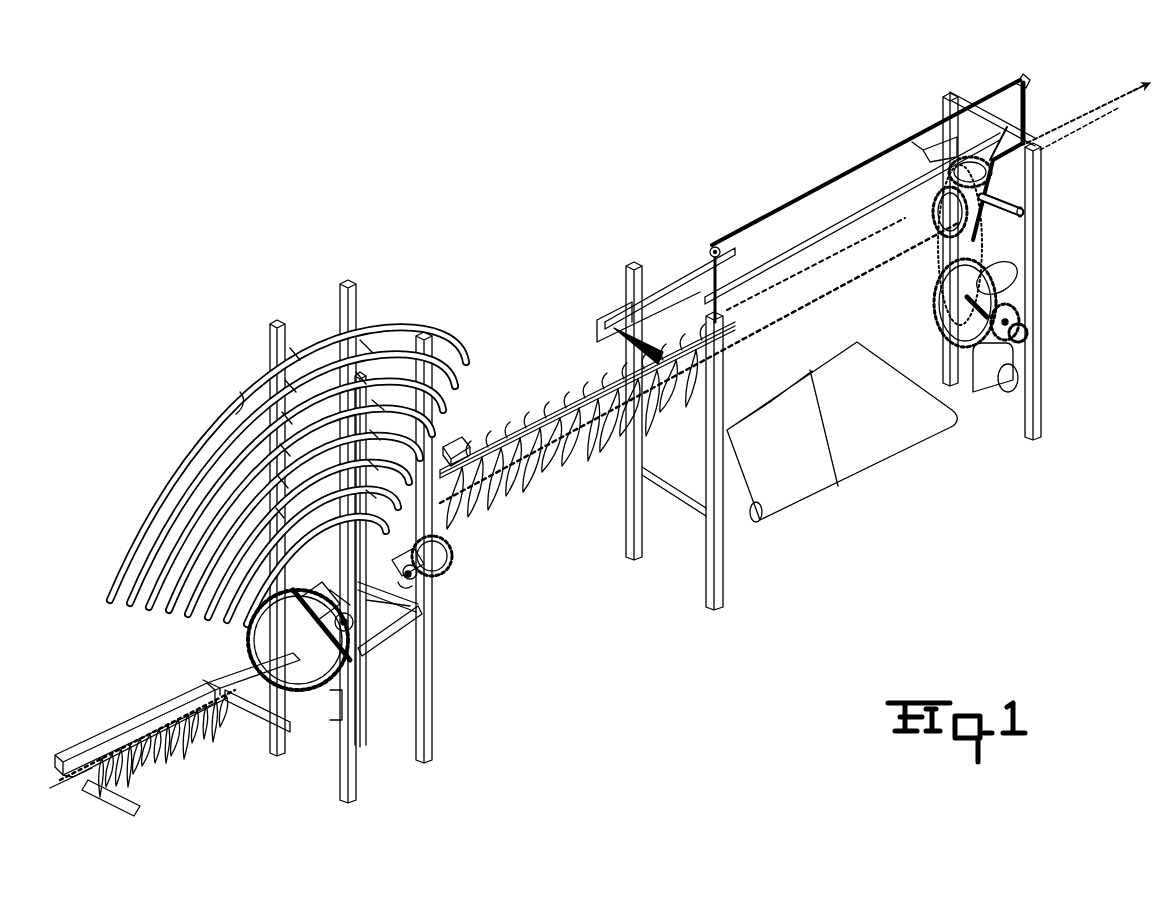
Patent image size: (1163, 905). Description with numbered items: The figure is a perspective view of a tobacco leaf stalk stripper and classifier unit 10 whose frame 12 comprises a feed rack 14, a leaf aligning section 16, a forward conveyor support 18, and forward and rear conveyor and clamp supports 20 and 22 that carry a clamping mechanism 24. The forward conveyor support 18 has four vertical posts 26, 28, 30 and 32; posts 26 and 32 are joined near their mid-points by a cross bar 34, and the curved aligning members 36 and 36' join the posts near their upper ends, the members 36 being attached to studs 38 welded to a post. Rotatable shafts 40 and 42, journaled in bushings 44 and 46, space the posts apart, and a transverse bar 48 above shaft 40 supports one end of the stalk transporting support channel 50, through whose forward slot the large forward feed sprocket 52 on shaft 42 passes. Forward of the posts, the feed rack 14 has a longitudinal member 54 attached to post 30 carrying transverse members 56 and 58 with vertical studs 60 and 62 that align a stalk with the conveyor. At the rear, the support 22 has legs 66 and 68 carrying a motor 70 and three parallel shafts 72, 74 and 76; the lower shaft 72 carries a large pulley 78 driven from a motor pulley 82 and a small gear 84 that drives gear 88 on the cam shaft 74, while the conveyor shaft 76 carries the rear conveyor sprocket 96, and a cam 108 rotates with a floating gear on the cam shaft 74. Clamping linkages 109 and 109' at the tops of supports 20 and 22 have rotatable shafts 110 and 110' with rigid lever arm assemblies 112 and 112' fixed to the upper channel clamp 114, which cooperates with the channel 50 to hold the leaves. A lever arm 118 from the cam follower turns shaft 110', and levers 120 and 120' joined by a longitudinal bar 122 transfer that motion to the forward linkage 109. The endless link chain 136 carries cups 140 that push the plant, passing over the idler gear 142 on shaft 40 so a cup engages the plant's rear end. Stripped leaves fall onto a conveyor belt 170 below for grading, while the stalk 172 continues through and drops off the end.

The tobacco leaf stalk stripper and classifier unit 10 is at (601, 446).
The frame 12 is at (315, 733).
The feed rack 14 is at (232, 778).
The leaf aligning section 16 is at (304, 442).
The forward conveyor support 18 is at (354, 541).
The forward conveyor and clamp support 20 is at (680, 612).
The rear conveyor and clamp support 22 is at (1000, 266).
The clamping mechanism 24 is at (862, 192).
The post 26 is at (432, 715).
The post 28 is at (355, 725).
The post 30 is at (280, 752).
The post 32 is at (356, 760).
The cross bar 34 is at (396, 638).
The curved aligning members 36 is at (314, 469).
The curved aligning member 36' is at (232, 391).
The studs 38 is at (358, 326).
The rotatable shaft 40 is at (418, 574).
The rotatable shaft 42 is at (323, 705).
The bushings 44 is at (412, 586).
The bushings 46 is at (352, 640).
The transverse bar 48 is at (440, 558).
The stalk transporting support channel 50 is at (562, 466).
The forward feed sprocket 52 is at (252, 640).
The longitudinal member 54 is at (144, 718).
The transverse member 56 is at (252, 740).
The transverse member 58 is at (140, 812).
The vertical stud 60 is at (210, 678).
The vertical stud 62 is at (90, 742).
The leg 66 is at (1044, 404).
The leg 68 is at (943, 378).
The motor 70 is at (1005, 392).
The lower shaft 72 is at (1026, 338).
The cam shaft 74 is at (1018, 274).
The conveyor shaft 76 is at (1028, 214).
The large pulley 78 is at (950, 324).
The motor pulley 82 is at (986, 375).
The small gear 84 is at (938, 292).
The gear 88 is at (938, 268).
The rear conveyor sprocket 96 is at (990, 176).
The cam 108 is at (1016, 308).
The clamping mechanism linkage 109 is at (670, 272).
The clamping mechanism linkage 109' is at (937, 118).
The rotatable shaft 110 is at (670, 275).
The rotatable shaft 110' is at (955, 112).
The rigid lever arm assembly 112 is at (639, 316).
The rigid lever arm assembly 112' is at (915, 136).
The upper channel clamp 114 is at (790, 246).
The lever arm 118 is at (1000, 188).
The lever 120 is at (735, 278).
The lever 120' is at (1049, 108).
The longitudinal bar 122 is at (830, 184).
The endless link chain 136 is at (692, 376).
The cups 140 is at (314, 652).
The idler gear 142 is at (384, 609).
The conveyor belt 170 is at (886, 452).
The stalk 172 is at (1100, 112).